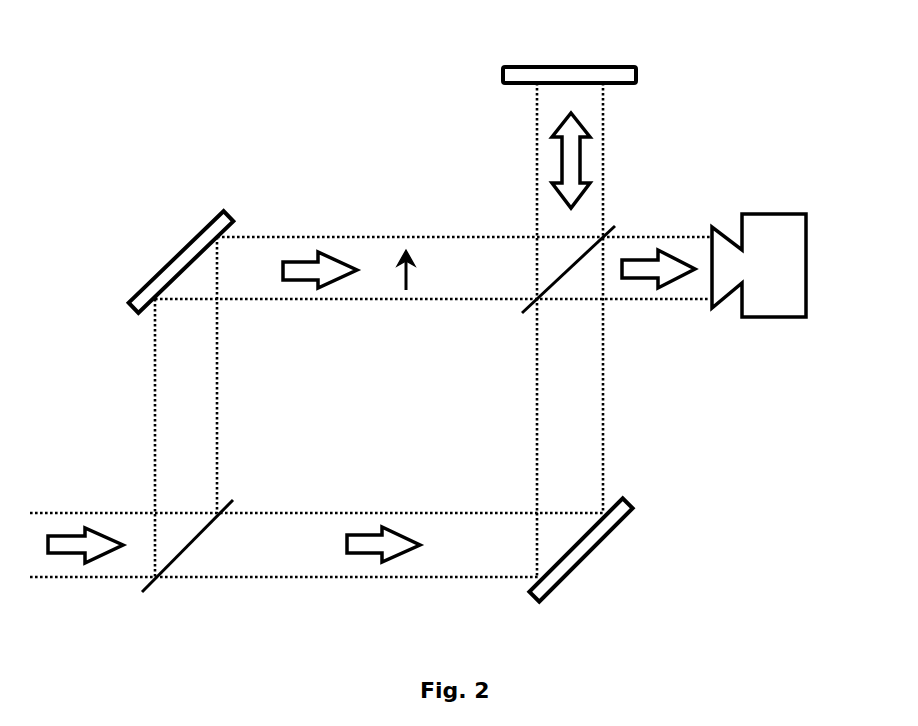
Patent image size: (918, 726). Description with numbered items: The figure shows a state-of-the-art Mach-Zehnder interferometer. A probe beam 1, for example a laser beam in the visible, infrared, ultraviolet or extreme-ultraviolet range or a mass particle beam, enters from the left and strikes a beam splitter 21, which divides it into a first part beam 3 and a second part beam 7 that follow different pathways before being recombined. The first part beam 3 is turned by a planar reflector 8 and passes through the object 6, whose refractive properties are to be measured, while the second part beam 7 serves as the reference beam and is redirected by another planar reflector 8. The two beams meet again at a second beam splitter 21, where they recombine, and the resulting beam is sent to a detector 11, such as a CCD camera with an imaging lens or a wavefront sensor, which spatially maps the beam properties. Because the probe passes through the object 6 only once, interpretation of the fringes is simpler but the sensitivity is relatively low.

The probe beam 1 is at (67, 530).
The first part beam 3 is at (283, 270).
The object 6 is at (410, 277).
The second part beam 7 is at (353, 553).
The planar reflector 8 is at (155, 278).
The detector 11 is at (783, 212).
The beam splitter 21 is at (147, 590).